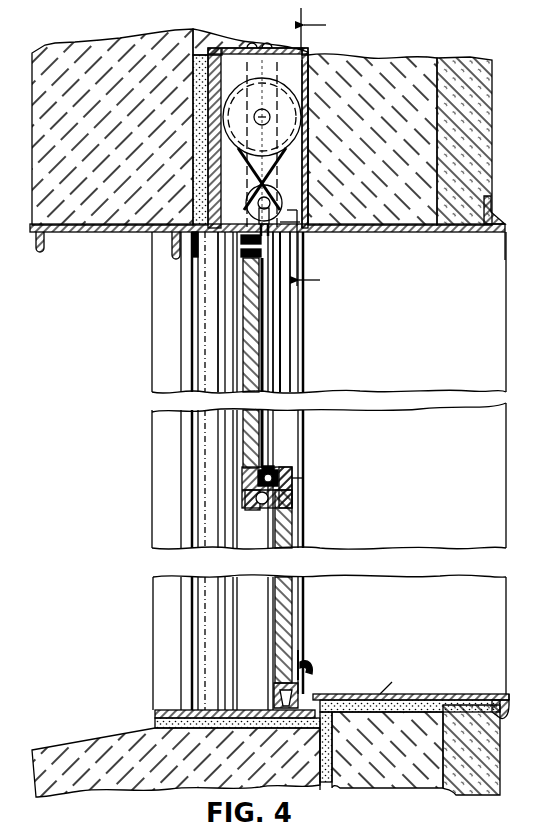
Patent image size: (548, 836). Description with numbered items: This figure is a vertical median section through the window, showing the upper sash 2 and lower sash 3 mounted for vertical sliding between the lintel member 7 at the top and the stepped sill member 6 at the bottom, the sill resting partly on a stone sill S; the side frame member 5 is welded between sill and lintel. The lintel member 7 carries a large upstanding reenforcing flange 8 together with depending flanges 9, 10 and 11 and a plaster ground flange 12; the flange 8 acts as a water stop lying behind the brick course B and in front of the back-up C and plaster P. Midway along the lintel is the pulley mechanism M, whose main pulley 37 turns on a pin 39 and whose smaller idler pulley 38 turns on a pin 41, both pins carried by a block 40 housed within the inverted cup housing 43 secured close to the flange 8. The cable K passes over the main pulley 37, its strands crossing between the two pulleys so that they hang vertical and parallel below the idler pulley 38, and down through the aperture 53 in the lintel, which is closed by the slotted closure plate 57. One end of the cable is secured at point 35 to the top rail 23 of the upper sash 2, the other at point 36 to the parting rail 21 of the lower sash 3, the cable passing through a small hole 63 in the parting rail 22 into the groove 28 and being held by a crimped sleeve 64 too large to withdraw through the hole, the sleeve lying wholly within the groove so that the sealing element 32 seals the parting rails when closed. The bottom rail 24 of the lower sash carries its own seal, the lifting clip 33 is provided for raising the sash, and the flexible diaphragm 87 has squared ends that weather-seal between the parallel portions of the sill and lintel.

The upper sash 2 is at (238, 328).
The lower sash 3 is at (293, 638).
The side frame member 5 is at (494, 643).
The sill member 6 is at (344, 351).
The lintel member 7 is at (388, 234).
The reenforcing flange 8 is at (214, 56).
The depending flange 9 is at (45, 243).
The depending flange 10 is at (192, 248).
The depending flange 11 is at (299, 252).
The plaster ground flange 12 is at (502, 216).
The parting rail 21 is at (242, 500).
The parting rail 22 is at (292, 474).
The top rail 23 is at (242, 254).
The bottom rail 24 is at (298, 697).
The groove 28 is at (296, 504).
The sealing element 32 is at (270, 472).
The lifting clip 33 is at (312, 665).
The cable attachment point 35 is at (241, 243).
The cable attachment point 36 is at (274, 478).
The main pulley 37 is at (292, 100).
The idler pulley 38 is at (281, 208).
The pin 39 is at (270, 116).
The block 40 is at (274, 168).
The pin 41 is at (270, 202).
The housing 43 is at (304, 132).
The aperture 53 is at (172, 246).
The closure plate 57 is at (300, 227).
The hole 63 is at (300, 478).
The sleeve 64 is at (292, 490).
The flexible diaphragm 87 is at (208, 302).
The brick course B is at (60, 48).
The back-up C is at (380, 62).
The cable K is at (282, 312).
The pulley mechanism M is at (310, 68).
The plaster P is at (490, 122).
The stone sill S is at (167, 788).